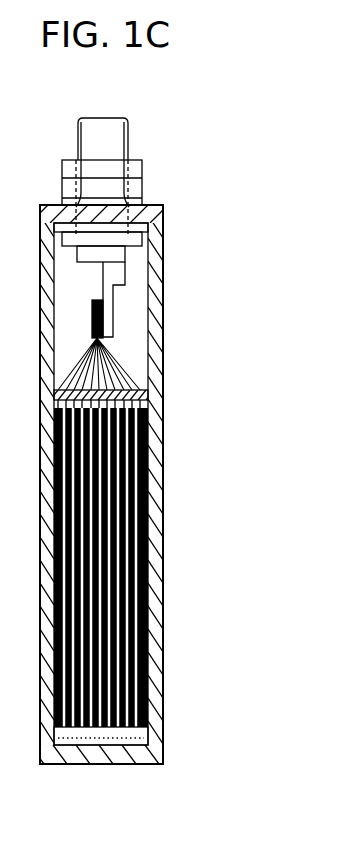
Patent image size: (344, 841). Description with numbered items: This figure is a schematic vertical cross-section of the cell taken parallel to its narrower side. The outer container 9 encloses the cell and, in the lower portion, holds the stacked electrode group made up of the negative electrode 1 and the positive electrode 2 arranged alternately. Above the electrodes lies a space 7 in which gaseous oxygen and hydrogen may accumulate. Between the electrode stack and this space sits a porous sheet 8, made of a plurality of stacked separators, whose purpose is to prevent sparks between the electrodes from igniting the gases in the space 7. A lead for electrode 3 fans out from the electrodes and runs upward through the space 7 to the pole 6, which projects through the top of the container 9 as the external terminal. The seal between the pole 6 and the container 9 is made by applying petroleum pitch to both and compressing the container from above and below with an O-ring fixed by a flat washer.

The negative electrode 1 is at (120, 495).
The positive electrode 2 is at (148, 542).
The lead for electrode 3 is at (120, 365).
The pole 6 is at (117, 139).
The space 7 is at (130, 308).
The porous sheet 8 is at (142, 395).
The container 9 is at (155, 645).